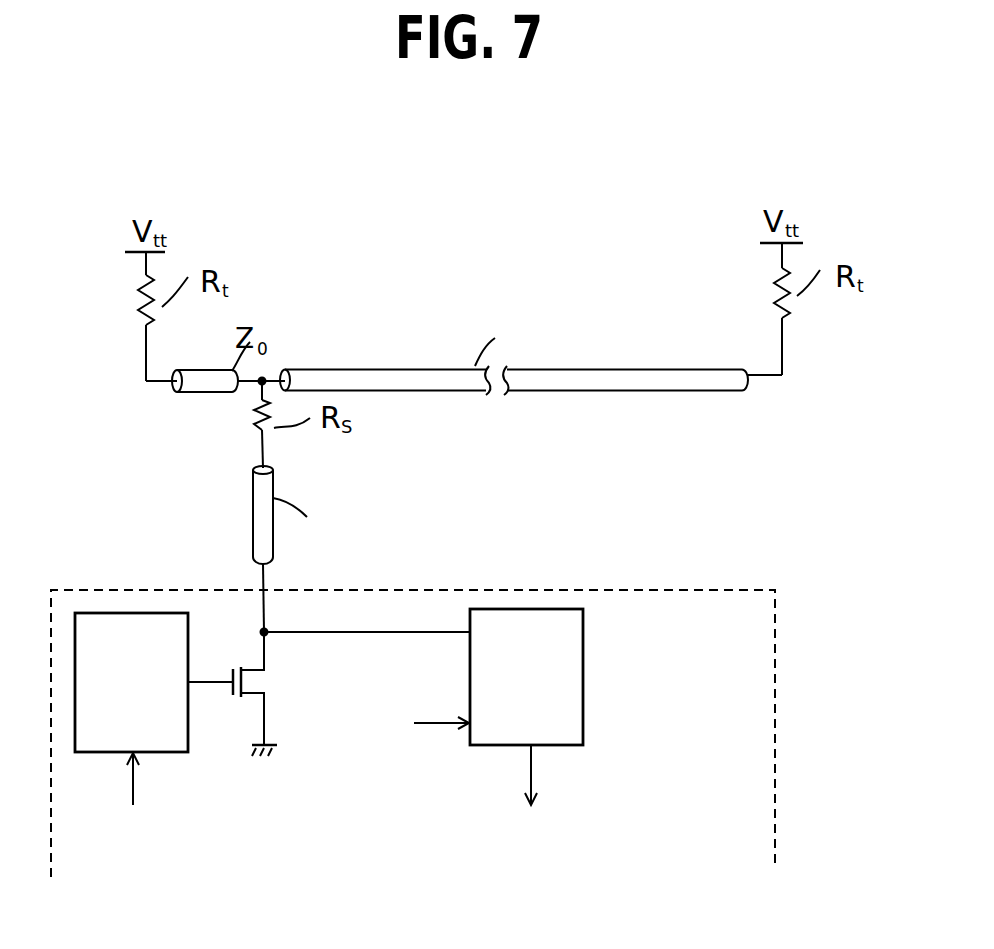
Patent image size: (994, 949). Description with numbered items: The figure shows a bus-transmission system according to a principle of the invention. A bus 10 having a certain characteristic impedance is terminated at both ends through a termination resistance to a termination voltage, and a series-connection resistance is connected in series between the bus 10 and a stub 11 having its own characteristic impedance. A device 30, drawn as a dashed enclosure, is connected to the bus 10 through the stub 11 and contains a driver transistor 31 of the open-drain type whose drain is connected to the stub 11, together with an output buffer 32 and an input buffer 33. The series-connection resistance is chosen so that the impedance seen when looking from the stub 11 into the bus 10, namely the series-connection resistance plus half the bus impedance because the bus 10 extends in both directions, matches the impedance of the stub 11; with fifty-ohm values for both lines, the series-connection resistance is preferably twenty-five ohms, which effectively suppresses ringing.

The bus 10 is at (300, 368).
The stub 11 is at (253, 480).
The device 30 is at (558, 589).
The driver transistor 31 is at (233, 697).
The output buffer 32 is at (100, 753).
The input buffer 33 is at (568, 747).